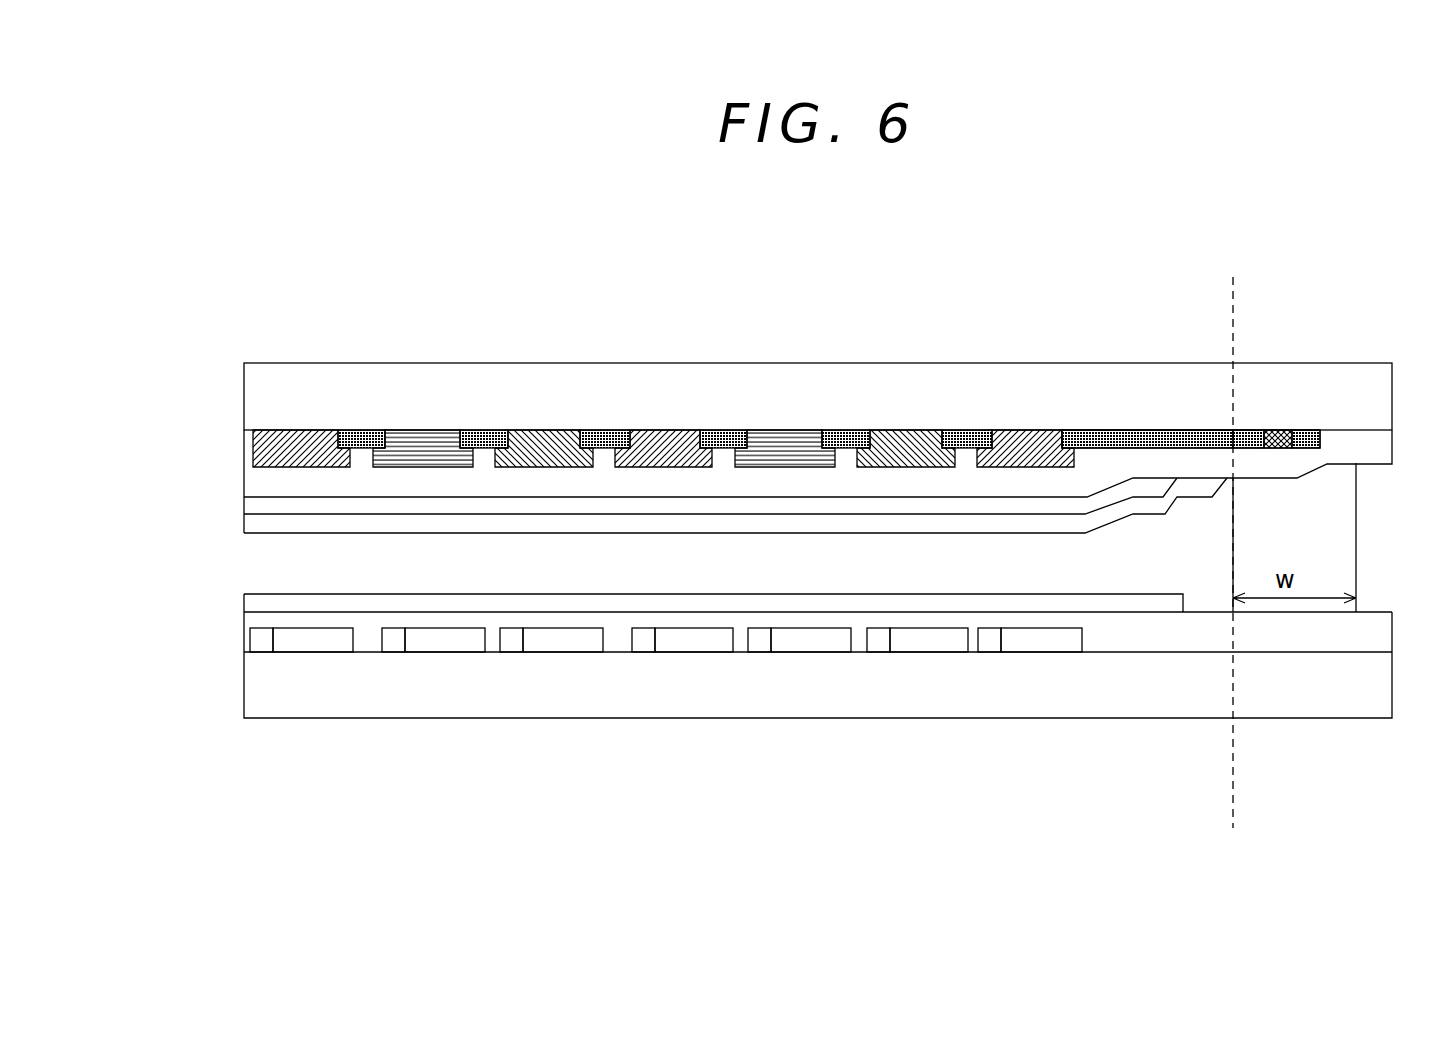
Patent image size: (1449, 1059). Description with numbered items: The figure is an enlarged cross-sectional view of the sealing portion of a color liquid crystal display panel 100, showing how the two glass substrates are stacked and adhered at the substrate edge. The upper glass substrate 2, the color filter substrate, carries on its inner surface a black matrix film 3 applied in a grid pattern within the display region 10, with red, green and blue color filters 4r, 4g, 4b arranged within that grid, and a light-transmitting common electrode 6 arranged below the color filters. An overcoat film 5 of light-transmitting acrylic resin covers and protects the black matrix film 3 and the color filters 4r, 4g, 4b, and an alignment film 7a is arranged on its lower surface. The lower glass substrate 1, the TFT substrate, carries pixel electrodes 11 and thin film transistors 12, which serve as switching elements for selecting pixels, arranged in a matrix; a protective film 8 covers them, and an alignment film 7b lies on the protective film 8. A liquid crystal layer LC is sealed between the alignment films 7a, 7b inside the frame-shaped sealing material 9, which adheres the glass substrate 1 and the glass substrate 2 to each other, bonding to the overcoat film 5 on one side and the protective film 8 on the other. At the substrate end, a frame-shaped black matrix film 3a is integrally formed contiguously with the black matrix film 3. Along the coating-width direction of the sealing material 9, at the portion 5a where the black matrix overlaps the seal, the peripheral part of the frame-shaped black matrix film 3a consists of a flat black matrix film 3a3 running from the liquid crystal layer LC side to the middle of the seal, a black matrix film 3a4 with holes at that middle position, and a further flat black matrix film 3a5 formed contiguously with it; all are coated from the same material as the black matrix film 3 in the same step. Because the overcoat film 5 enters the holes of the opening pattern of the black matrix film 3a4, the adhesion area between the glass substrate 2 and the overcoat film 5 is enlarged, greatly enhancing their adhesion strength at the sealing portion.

The glass substrate 1 is at (1366, 690).
The glass substrate 2 is at (1365, 393).
The black matrix film 3 is at (359, 430).
The frame-shaped black matrix film 3a is at (1110, 430).
The flat black matrix film 3a3 is at (1262, 428).
The black matrix film with holes 3a4 is at (1279, 430).
The flat black matrix film 3a5 is at (1292, 428).
The red color filter 4r is at (548, 446).
The green color filter 4g is at (676, 446).
The blue color filter 4b is at (808, 446).
The overcoat film 5 is at (244, 482).
The portion where black matrix films overlap sealing material 5a is at (1352, 503).
The common electrode 6 is at (244, 507).
The alignment film 7a is at (244, 521).
The alignment film 7b is at (244, 604).
The protective film 8 is at (1368, 634).
The sealing material 9 is at (1358, 536).
The display region 10 is at (1219, 822).
The pixel electrode 11 is at (453, 643).
The thin film transistor 12 is at (392, 643).
The liquid crystal display panel 100 is at (188, 357).
The liquid crystal layer LC is at (258, 561).